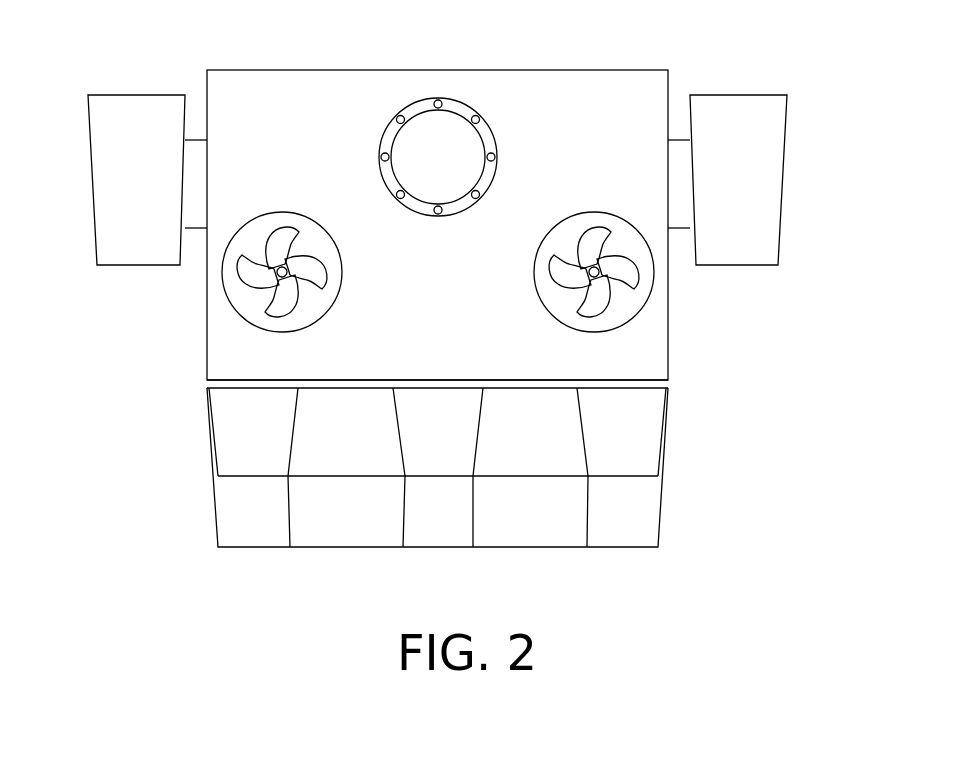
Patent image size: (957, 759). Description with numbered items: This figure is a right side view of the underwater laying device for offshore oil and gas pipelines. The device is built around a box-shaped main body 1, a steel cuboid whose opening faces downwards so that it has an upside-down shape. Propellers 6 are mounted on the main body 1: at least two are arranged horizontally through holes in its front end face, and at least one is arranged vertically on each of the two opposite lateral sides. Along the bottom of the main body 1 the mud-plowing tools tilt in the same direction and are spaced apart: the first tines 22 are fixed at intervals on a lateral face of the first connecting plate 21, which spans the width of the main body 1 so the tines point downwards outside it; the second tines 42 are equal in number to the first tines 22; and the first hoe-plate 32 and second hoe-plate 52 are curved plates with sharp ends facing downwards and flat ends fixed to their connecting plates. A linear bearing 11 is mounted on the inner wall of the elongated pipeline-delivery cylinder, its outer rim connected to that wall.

The box-shaped main body 1 is at (437, 194).
The linear bearing 11 is at (498, 108).
The propellers 6 is at (460, 192).
The first connecting plate 21 is at (494, 406).
The first tines 22 is at (486, 489).
The first hoe-plate 32 is at (560, 489).
The second tines 42 is at (454, 489).
The second hoe-plate 52 is at (339, 489).